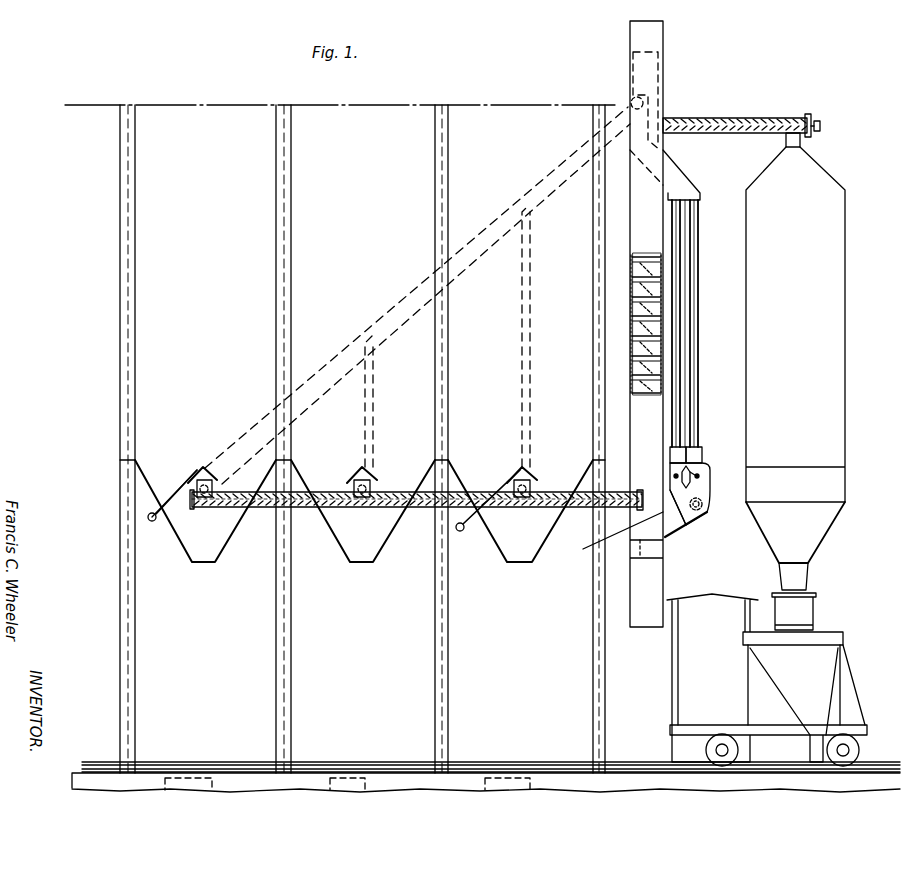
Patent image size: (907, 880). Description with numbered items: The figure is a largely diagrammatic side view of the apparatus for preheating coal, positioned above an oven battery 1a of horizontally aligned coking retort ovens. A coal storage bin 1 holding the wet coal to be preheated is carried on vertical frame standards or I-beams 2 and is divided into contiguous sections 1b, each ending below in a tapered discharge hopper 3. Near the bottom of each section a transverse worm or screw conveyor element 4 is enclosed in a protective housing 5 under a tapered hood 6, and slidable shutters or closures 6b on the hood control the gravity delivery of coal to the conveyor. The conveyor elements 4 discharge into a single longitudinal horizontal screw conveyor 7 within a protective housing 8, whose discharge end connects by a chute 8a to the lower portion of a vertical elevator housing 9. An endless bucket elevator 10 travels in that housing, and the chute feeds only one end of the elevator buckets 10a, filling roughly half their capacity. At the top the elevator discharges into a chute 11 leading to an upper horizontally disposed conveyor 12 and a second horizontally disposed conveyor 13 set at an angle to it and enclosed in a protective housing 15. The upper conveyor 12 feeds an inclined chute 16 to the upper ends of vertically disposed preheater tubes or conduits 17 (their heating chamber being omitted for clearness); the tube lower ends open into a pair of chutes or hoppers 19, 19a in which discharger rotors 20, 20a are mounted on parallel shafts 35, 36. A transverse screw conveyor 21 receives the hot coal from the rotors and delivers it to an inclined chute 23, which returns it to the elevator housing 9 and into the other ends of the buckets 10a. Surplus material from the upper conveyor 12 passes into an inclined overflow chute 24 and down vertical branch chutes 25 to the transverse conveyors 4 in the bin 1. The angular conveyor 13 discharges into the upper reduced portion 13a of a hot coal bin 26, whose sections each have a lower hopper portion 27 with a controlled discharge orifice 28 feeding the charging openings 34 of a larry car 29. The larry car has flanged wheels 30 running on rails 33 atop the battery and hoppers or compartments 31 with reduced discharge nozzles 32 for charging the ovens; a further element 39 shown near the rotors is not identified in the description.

The coal storage bin 1 is at (340, 156).
The oven battery 1a is at (93, 782).
The contiguous sections 1b is at (362, 359).
The vertical frame standards or I-beams 2 is at (120, 617).
The tapered discharge hopper 3 is at (364, 511).
The worm or screw conveyor element 4 is at (214, 487).
The protective housing 5 is at (187, 485).
The tapered hood 6 is at (205, 466).
The slidable shutters or closures 6b is at (510, 475).
The horizontal screw conveyor 7 is at (419, 507).
The protective housing 8 is at (267, 507).
The chute 8a is at (635, 527).
The elevator housing 9 is at (630, 31).
The endless bucket elevator 10 is at (630, 320).
The elevator buckets 10a is at (630, 370).
The chute 11 is at (633, 65).
The upper horizontally disposed conveyor 12 is at (632, 101).
The second horizontally disposed conveyor 13 is at (705, 118).
The upper reduced portion 13a is at (800, 141).
The protective housing 15 is at (748, 118).
The inclined chute 16 is at (675, 175).
The preheater tubes or conduits 17 is at (692, 235).
The chute or hopper 19 is at (672, 457).
The chute or hopper 19a is at (705, 460).
The discharger rotor 20 is at (674, 477).
The discharger rotor 20a is at (699, 475).
The transverse screw conveyor 21 is at (703, 515).
The inclined chute 23 is at (668, 528).
The inclined overflow chute 24 is at (552, 180).
The vertical branch chutes 25 is at (378, 392).
The hot coal bin 26 is at (823, 250).
The lower hopper portion 27 is at (810, 525).
The discharge orifice 28 is at (800, 575).
The larry car 29 is at (838, 633).
The flanged wheels 30 is at (860, 750).
The hoppers or compartments 31 is at (806, 690).
The reduced discharge portion or nozzle 32 is at (808, 751).
The rails 33 is at (502, 762).
The charging openings 34 is at (810, 607).
The shaft 35 is at (674, 507).
The shaft 36 is at (700, 479).
The valve shaft 39 is at (697, 497).